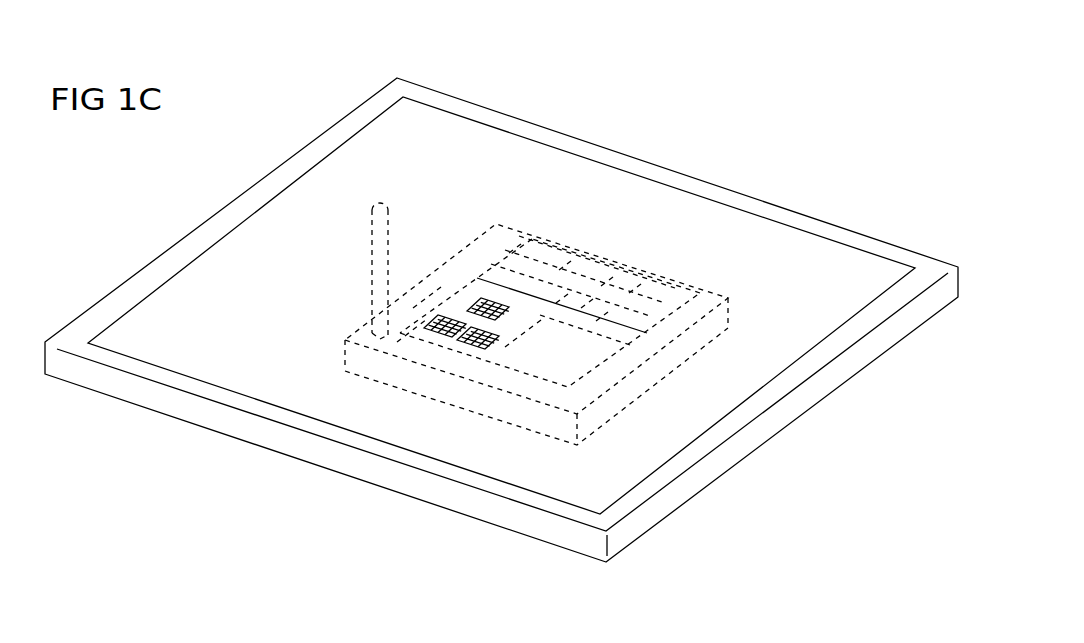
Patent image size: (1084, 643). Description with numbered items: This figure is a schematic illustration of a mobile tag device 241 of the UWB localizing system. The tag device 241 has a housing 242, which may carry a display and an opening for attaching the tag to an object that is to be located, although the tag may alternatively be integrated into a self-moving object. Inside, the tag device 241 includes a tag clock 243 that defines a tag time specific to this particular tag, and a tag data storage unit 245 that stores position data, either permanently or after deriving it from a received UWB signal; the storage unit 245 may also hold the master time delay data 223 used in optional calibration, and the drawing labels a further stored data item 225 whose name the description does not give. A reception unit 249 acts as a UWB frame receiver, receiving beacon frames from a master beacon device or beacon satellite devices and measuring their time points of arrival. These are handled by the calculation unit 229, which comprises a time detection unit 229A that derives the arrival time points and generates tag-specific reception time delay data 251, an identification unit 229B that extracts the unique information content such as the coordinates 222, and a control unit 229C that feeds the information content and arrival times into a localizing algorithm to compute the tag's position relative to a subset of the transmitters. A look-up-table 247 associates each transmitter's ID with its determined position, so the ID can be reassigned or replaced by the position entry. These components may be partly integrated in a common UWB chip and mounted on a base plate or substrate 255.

The mobile tag device 241 is at (501, 320).
The housing 242 is at (292, 447).
The tag clock 243 is at (595, 370).
The tag data storage unit 245 is at (420, 340).
The look-up-table 247 is at (432, 320).
The coordinates 222 is at (434, 266).
The master time delay data 223 is at (483, 230).
The die 225 is at (486, 302).
The calculation unit 229 is at (595, 249).
The time detection unit 229A is at (513, 250).
The identification unit 229B is at (563, 267).
The control unit 229C is at (605, 283).
The reception unit 249 is at (372, 262).
The tag-specific reception time delay data 251 is at (468, 343).
The substrate 255 is at (700, 296).